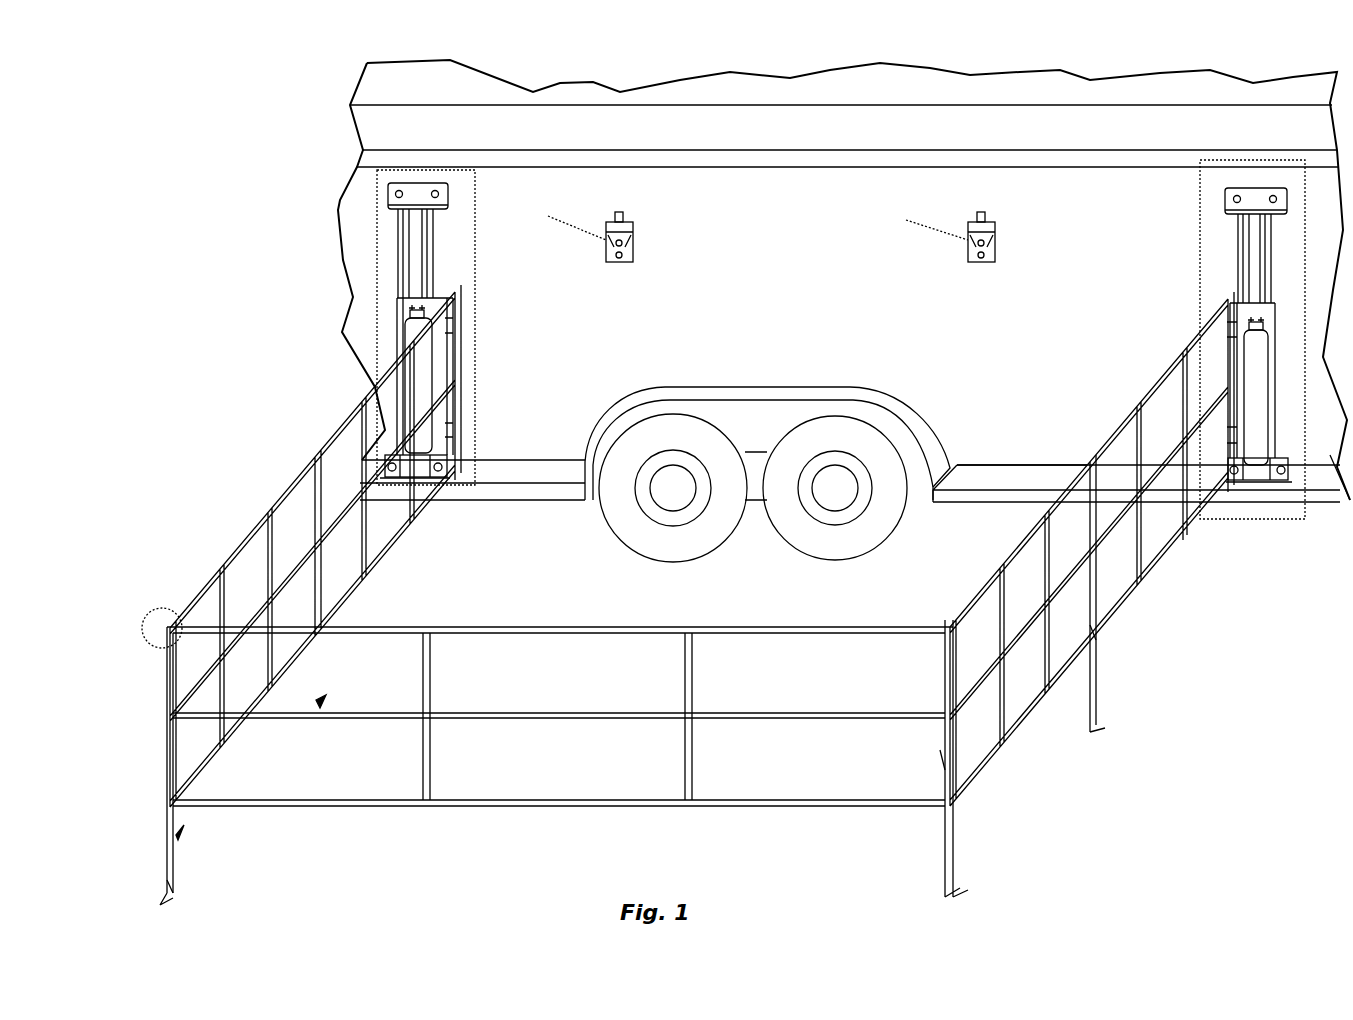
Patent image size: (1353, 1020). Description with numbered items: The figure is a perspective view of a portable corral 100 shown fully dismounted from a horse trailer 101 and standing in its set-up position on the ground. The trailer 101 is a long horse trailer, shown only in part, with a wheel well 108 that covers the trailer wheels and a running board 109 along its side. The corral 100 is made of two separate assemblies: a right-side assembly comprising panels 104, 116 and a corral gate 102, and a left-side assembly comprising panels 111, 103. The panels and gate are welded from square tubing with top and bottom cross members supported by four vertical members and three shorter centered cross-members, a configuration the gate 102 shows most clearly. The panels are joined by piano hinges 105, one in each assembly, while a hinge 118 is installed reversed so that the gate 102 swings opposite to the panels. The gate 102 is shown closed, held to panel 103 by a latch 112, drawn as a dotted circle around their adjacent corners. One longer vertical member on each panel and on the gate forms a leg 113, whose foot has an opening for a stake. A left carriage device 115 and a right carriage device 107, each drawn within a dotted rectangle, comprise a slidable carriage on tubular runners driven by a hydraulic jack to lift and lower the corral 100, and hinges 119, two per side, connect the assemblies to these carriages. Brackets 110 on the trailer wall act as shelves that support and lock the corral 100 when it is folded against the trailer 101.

The portable corral 100 is at (283, 368).
The horse trailer 101 is at (346, 258).
The corral gate 102 is at (534, 727).
The corral panel 103 is at (266, 512).
The corral panel 104 is at (1105, 561).
The hinge 105 is at (318, 564).
The right carriage device 107 is at (1252, 147).
The wheel well 108 is at (745, 386).
The running board 109 is at (1042, 472).
The bracket 110 is at (637, 255).
The corral panel 111 is at (458, 410).
The latch 112 is at (162, 608).
The leg 113 is at (176, 835).
The left carriage device 115 is at (528, 281).
The corral panel 116 is at (1115, 735).
The hinge 118 is at (945, 757).
The hinge 119 is at (457, 308).